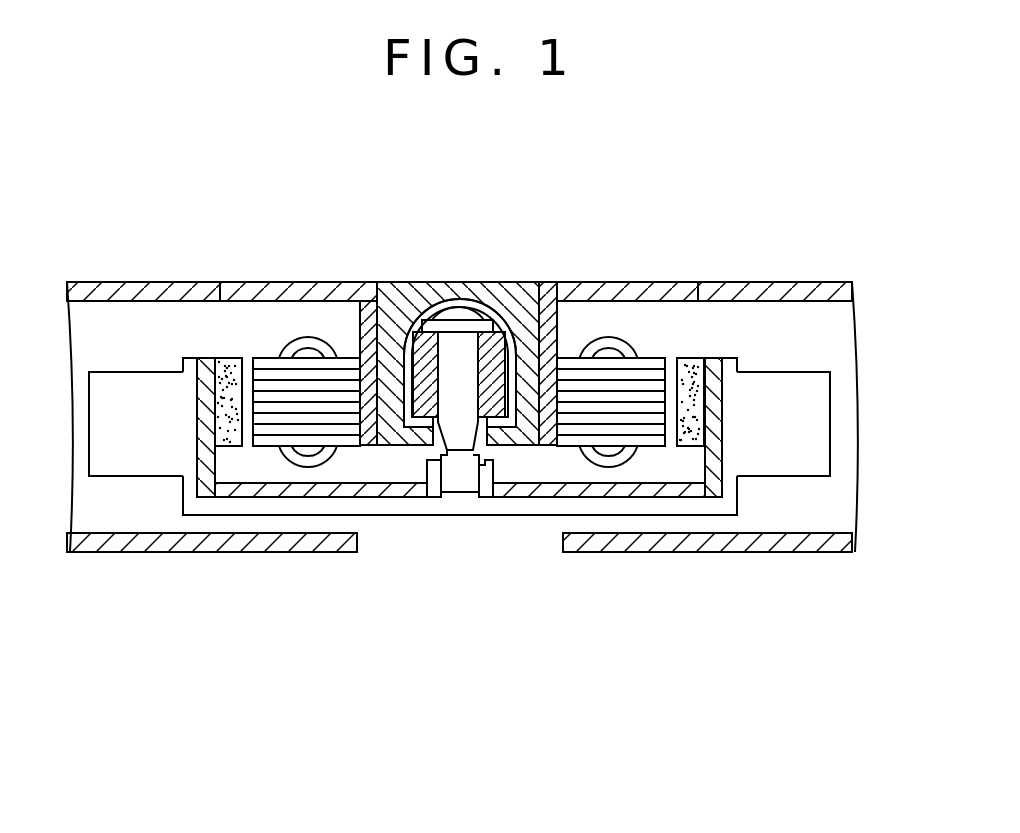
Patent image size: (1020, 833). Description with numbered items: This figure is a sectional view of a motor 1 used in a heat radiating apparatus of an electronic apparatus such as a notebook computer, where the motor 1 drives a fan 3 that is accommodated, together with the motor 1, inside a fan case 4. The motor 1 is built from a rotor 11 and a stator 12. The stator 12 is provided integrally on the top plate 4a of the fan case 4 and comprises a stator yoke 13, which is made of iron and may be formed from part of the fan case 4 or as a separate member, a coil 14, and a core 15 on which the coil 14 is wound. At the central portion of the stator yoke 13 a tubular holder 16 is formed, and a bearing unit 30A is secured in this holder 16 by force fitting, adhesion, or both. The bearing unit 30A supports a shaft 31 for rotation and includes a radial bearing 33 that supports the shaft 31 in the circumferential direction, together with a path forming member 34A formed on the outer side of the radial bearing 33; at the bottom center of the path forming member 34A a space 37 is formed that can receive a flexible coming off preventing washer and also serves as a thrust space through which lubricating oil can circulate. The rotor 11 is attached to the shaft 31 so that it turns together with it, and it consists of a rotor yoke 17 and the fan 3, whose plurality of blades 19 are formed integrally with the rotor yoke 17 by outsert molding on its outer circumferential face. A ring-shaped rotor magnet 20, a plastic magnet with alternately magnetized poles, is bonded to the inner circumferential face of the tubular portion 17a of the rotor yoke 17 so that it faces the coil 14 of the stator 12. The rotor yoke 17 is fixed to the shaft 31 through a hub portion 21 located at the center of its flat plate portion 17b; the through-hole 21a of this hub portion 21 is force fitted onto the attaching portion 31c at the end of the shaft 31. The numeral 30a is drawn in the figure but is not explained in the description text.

The motor 1 is at (498, 648).
The fan 3 is at (818, 398).
The fan case 4 is at (792, 542).
The top plate 4a is at (793, 282).
The rotor 11 is at (238, 510).
The stator 12 is at (242, 282).
The stator yoke 13 is at (646, 282).
The coil 14 is at (290, 350).
The core 15 is at (273, 443).
The holder 16 is at (540, 344).
The rotor yoke 17 is at (706, 490).
The tubular portion 17a is at (711, 364).
The flat plate portion 17b is at (522, 488).
The blades 19 is at (138, 460).
The rotor magnet 20 is at (226, 362).
The hub portion 21 is at (490, 477).
The through-hole 21a is at (443, 474).
The bearing unit 30A is at (480, 264).
The bearing foot 30a is at (431, 429).
The shaft 31 is at (459, 342).
The attaching portion 31c is at (467, 480).
The radial bearing 33 is at (401, 336).
The path forming member 34A is at (420, 345).
The space 37 is at (378, 329).